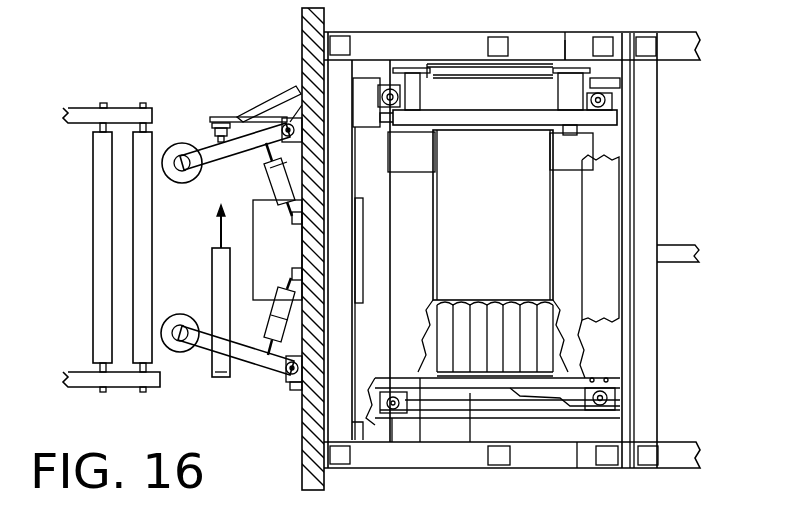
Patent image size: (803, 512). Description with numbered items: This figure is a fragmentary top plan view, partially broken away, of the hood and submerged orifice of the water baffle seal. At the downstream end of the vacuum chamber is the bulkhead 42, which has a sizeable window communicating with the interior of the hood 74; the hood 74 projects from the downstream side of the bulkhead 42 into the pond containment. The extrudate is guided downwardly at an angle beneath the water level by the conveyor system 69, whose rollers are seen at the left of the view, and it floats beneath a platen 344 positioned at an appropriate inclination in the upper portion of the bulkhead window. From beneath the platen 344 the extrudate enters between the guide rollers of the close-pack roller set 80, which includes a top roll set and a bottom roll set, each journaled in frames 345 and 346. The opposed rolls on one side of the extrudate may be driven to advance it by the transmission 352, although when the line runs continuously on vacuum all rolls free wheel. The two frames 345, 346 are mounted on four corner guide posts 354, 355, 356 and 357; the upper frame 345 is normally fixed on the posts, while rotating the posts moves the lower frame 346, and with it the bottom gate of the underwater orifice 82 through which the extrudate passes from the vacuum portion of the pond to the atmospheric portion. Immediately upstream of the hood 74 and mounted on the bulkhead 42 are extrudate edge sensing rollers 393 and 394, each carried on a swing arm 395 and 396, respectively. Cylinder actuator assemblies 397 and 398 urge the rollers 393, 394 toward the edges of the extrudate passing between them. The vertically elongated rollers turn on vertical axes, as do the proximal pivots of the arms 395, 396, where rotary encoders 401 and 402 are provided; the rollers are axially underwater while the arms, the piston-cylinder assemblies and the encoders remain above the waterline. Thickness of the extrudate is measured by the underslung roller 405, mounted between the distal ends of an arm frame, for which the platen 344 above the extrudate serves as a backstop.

The conveyor system 69 is at (114, 103).
The bulkhead 42 is at (290, 251).
The rotary encoder 401 is at (292, 105).
The swing arm 395 is at (243, 148).
The extrudate edge sensing roller 393 is at (181, 146).
The cylinder actuator assembly 397 is at (262, 182).
The platen 344 is at (262, 226).
The underslung roller 405 is at (222, 300).
The cylinder actuator assembly 398 is at (270, 304).
The extrudate edge sensing roller 394 is at (176, 352).
The swing arm 396 is at (238, 373).
The rotary encoder 402 is at (284, 379).
The hood 74 is at (653, 24).
The orifice 82 is at (638, 174).
The transmission 352 is at (523, 70).
The corner guide post 354 is at (391, 88).
The frame 345 is at (496, 118).
The corner guide post 355 is at (608, 98).
The close-pack roller set 80 is at (476, 362).
The frame 346 is at (427, 390).
The corner guide post 357 is at (393, 412).
The corner guide post 356 is at (612, 398).